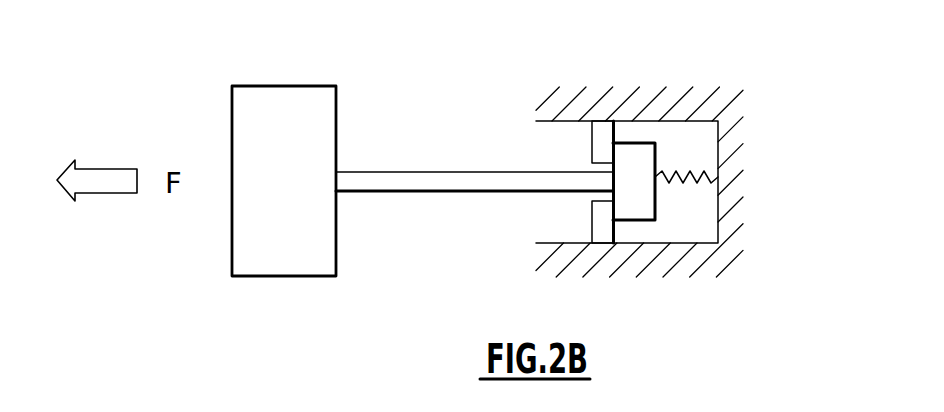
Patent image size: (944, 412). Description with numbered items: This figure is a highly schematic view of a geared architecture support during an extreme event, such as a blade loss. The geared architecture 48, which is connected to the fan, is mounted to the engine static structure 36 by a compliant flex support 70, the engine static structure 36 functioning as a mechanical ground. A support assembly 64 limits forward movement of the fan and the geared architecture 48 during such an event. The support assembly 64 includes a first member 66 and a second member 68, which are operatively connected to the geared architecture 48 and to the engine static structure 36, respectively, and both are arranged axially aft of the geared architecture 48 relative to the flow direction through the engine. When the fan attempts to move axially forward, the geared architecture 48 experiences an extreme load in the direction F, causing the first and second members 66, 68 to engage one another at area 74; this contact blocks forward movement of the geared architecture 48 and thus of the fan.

The geared architecture 48 is at (300, 129).
The geared architecture support assembly 64 is at (751, 82).
The engine static structure 36 is at (667, 243).
The first member 66 is at (592, 143).
The second member 68 is at (650, 195).
The area 74 is at (615, 155).
The compliant flex support 70 is at (691, 168).